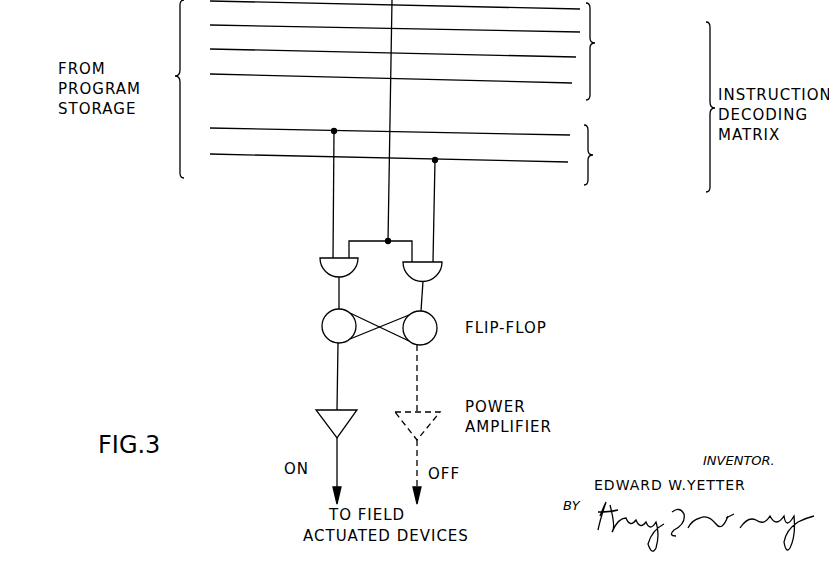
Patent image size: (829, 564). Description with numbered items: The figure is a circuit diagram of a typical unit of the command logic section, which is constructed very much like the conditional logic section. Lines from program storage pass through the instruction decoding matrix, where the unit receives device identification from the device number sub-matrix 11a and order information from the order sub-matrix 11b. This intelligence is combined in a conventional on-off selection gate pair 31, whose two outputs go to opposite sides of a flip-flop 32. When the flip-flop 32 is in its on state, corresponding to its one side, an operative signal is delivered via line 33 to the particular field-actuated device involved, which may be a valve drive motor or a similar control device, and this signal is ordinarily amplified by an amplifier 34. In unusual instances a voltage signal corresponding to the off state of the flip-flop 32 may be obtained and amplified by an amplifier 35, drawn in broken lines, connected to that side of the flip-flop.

The sub-matrix 11a is at (597, 30).
The sub-matrix 11b is at (597, 147).
The on-off selection gate pair 31 is at (376, 252).
The flip-flop 32 is at (376, 340).
The line 33 is at (337, 375).
The amplifier 34 is at (320, 415).
The amplifier 35 is at (421, 411).